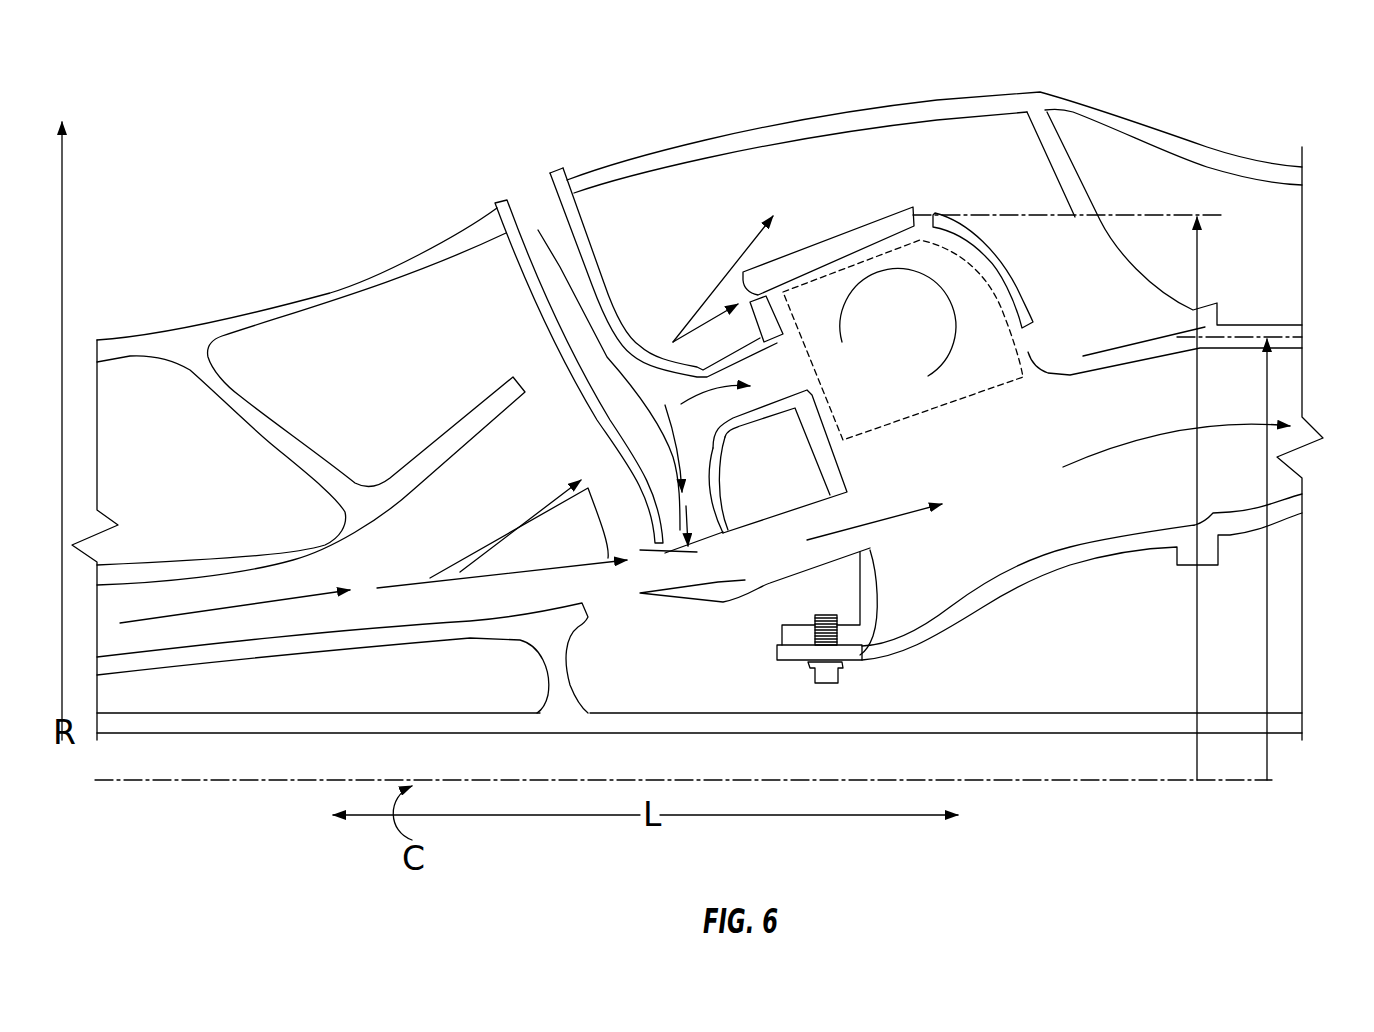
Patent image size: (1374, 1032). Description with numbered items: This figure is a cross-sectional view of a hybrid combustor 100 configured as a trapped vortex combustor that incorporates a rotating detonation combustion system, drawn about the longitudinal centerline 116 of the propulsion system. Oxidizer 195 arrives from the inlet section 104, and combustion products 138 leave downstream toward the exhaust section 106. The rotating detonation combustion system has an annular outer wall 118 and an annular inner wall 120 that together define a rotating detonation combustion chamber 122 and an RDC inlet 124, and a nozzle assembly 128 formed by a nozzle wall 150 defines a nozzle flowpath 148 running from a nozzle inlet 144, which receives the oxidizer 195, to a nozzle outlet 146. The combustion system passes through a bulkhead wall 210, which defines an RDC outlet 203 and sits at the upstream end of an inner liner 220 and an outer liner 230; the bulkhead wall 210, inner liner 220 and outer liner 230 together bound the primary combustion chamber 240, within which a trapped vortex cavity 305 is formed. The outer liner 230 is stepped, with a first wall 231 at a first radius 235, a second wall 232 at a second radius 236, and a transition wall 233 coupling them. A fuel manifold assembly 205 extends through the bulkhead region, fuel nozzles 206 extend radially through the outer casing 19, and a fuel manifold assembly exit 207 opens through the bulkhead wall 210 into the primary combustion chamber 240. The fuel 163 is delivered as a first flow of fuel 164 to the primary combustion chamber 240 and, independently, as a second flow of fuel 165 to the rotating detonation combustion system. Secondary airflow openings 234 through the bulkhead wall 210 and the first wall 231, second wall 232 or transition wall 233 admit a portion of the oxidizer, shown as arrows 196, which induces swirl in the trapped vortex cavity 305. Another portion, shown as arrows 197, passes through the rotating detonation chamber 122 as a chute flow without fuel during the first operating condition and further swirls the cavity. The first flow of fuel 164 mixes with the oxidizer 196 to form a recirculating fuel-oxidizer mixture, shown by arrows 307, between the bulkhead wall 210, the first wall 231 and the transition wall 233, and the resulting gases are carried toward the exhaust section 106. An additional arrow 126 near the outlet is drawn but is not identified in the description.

The outer casing 19 is at (372, 277).
The hybrid combustor 100 is at (838, 80).
The inlet section 104 is at (102, 268).
The exhaust section 106 is at (1346, 86).
The longitudinal centerline 116 is at (1082, 780).
The annular outer wall 118 is at (758, 518).
The annular inner wall 120 is at (793, 572).
The rotating detonation combustion chamber 122 is at (794, 560).
The RDC inlet 124 is at (730, 575).
The air flow 126 is at (873, 540).
The nozzle assembly 128 is at (683, 608).
The combustion products 138 is at (870, 515).
The nozzle inlet 144 is at (620, 592).
The nozzle outlet 146 is at (718, 566).
The nozzle flowpath 148 is at (673, 584).
The nozzle wall 150 is at (640, 550).
The fuel 163 is at (552, 262).
The first flow of fuel 164 is at (735, 370).
The second flow of fuel 165 is at (680, 453).
The flow of oxidizer 195 is at (208, 607).
The oxidizer through secondary airflow openings 196 is at (517, 528).
The oxidizer through RDC system 197 is at (523, 577).
The RDC outlet 203 is at (878, 560).
The fuel manifold assembly 205 is at (620, 312).
The fuel nozzle 206 is at (530, 282).
The fuel manifold assembly exit 207 is at (806, 323).
The bulkhead wall 210 is at (827, 467).
The inner liner 220 is at (1036, 570).
The outer liner 230 is at (815, 244).
The first wall 231 is at (852, 231).
The second wall 232 is at (1080, 358).
The transition wall 233 is at (1012, 268).
The secondary airflow opening 234 is at (746, 314).
The first radius 235 is at (1199, 263).
The second radius 236 is at (1270, 387).
The primary combustion chamber 240 is at (1044, 449).
The trapped vortex cavity 305 is at (919, 330).
The fuel-oxidizer mixture 307 is at (922, 368).